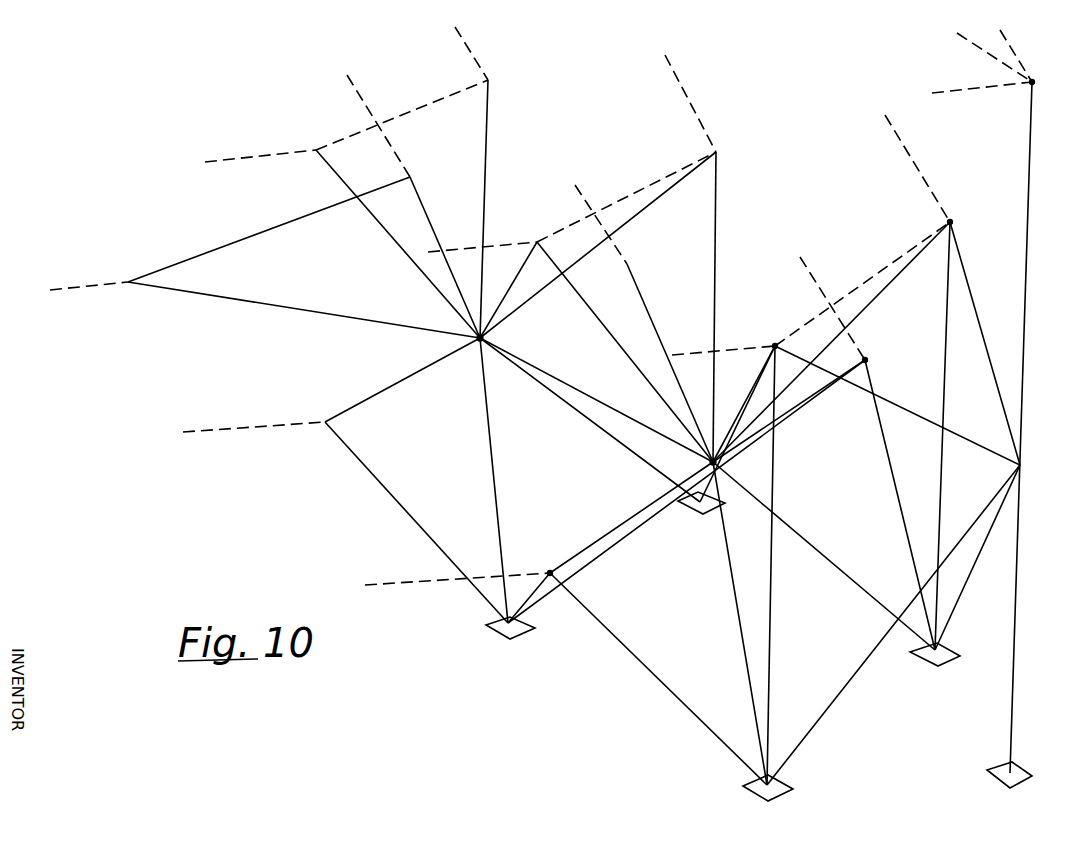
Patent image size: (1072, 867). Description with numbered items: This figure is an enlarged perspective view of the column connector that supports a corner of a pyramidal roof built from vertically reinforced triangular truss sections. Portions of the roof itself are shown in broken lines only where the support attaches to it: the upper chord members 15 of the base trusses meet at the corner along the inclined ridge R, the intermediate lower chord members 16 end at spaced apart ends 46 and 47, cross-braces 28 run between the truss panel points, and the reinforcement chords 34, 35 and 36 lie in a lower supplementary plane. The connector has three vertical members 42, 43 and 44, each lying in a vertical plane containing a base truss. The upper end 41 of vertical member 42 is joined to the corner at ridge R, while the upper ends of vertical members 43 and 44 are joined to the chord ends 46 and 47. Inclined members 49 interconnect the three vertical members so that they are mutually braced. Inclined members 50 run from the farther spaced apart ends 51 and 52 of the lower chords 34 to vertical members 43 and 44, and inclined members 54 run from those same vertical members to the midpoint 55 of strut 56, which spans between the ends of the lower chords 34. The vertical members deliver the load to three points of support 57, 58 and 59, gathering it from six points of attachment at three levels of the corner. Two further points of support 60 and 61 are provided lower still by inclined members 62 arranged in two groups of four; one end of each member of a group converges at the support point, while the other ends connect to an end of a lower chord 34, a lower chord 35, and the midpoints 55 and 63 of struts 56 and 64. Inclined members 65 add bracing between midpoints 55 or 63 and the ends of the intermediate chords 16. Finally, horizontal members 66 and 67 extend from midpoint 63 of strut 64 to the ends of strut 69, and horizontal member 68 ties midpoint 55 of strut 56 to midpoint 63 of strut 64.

The upper chord members 15 is at (1012, 50).
The lower chord members 16 is at (470, 48).
The cross-braces 28 is at (408, 112).
The lower chords 34 is at (814, 280).
The lower chord 35 is at (579, 190).
The lower chord 36 is at (388, 140).
The upper end of vertical member 41 is at (1034, 82).
The vertical member 42 is at (1021, 546).
The vertical member 43 is at (944, 494).
The vertical member 44 is at (771, 633).
The proximate end of intermediate chord 46 is at (951, 220).
The proximate end of intermediate chord 47 is at (775, 344).
The inclined members 49 is at (893, 403).
The inclined members 50 is at (611, 637).
The end of lower chord 51 is at (866, 358).
The end of lower chord 52 is at (551, 572).
The inclined members 54 is at (810, 548).
The midpoint of strut 55 is at (716, 462).
The strut 56 is at (638, 516).
The point of support 57 is at (943, 648).
The point of support 58 is at (775, 783).
The point of support 59 is at (1012, 770).
The point of support 60 is at (497, 630).
The point of support 61 is at (699, 511).
The inclined members 62 is at (497, 481).
The midpoint of strut 63 is at (484, 338).
The strut 64 is at (408, 392).
The inclined members 65 is at (490, 160).
The horizontal member 66 is at (306, 316).
The horizontal member 67 is at (421, 198).
The horizontal member 68 is at (557, 375).
The strut 69 is at (245, 243).
The inclined ridge R is at (975, 52).